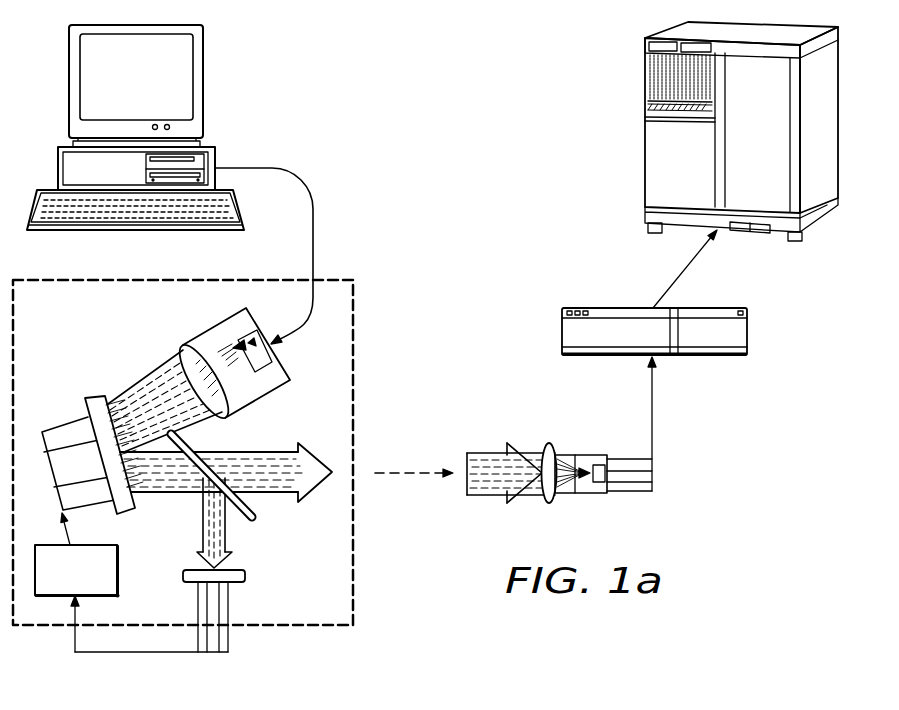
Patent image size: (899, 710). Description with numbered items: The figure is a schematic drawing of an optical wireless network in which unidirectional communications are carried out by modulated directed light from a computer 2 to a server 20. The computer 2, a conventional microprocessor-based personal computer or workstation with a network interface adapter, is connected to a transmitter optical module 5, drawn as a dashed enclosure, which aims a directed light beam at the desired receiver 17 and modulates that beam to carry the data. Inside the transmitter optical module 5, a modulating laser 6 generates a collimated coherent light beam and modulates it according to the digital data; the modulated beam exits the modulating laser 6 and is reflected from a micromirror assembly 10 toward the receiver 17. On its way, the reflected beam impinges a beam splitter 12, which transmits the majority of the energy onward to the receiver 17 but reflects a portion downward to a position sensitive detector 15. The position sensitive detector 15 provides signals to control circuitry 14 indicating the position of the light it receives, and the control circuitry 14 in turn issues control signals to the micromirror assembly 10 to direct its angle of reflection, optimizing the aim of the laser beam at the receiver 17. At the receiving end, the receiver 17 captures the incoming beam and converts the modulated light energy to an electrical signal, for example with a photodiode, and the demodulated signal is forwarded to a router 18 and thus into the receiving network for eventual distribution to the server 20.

The computer 2 is at (220, 157).
The transmitter optical module 5 is at (354, 340).
The modulating laser 6 is at (202, 331).
The micromirror assembly 10 is at (96, 397).
The beam splitter 12 is at (257, 512).
The control circuitry 14 is at (118, 572).
The position sensitive detector 15 is at (248, 578).
The receiver 17 is at (590, 495).
The router 18 is at (607, 308).
The server 20 is at (648, 165).